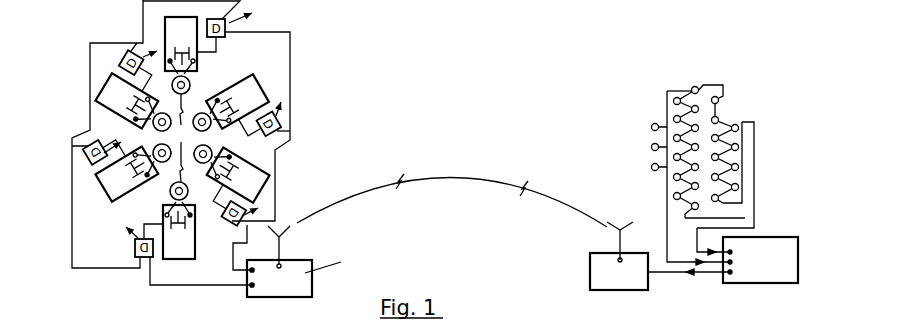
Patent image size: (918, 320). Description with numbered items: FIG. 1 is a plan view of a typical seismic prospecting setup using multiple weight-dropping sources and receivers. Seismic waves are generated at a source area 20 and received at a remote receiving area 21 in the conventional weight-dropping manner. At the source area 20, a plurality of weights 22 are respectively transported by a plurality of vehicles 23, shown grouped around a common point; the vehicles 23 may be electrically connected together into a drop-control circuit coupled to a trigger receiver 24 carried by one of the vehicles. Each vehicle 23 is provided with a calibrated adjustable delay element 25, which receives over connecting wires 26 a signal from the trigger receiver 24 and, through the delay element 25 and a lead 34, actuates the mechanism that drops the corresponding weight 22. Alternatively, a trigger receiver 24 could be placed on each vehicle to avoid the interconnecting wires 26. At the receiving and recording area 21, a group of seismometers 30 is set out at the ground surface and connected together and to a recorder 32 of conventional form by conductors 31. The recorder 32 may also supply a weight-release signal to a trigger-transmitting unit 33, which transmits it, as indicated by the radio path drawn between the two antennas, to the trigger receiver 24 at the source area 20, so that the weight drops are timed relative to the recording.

The source area 20 is at (208, 141).
The receiving area 21 is at (712, 128).
The weights 22 is at (205, 132).
The vehicles 23 is at (172, 28).
The trigger receiver 24 is at (303, 285).
The calibrated adjustable delay element 25 is at (226, 20).
The connecting wires 26 is at (70, 234).
The seismometers 30 is at (650, 164).
The conductors 31 is at (726, 213).
The recorder 32 is at (746, 278).
The trigger-transmitting unit 33 is at (591, 263).
The lead 34 is at (230, 51).